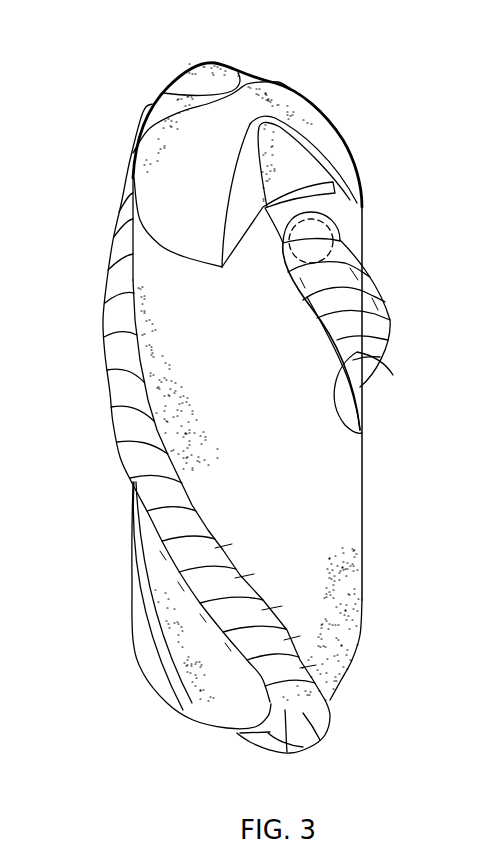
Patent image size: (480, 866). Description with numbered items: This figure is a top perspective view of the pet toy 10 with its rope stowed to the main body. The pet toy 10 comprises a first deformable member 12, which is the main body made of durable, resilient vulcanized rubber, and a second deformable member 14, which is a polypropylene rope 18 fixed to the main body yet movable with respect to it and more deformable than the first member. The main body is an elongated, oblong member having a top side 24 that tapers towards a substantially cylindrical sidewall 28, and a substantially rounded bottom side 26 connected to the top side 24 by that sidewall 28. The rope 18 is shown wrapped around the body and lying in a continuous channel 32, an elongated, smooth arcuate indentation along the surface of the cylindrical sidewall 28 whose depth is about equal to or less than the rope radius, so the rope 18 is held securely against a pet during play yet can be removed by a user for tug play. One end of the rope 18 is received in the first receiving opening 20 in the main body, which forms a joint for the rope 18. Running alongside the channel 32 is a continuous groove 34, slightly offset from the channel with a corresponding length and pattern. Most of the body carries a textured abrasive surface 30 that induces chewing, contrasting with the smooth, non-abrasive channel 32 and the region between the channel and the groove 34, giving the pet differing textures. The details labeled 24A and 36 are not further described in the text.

The pet toy 10 is at (378, 92).
The first deformable member 12 is at (363, 503).
The second deformable member 14 is at (103, 392).
The rope 18 is at (113, 438).
The first receiving opening 20 is at (340, 252).
The top side 24 is at (265, 104).
The top flap portion 24A is at (243, 192).
The bottom side 26 is at (237, 735).
The cylindrical sidewall 28 is at (308, 546).
The abrasive surface 30 is at (318, 592).
The continuous channel 32 is at (345, 358).
The continuous groove 34 is at (360, 430).
The lower left lobe 36 is at (147, 648).